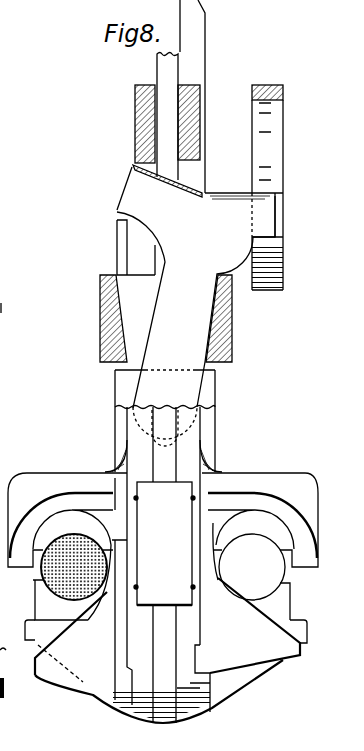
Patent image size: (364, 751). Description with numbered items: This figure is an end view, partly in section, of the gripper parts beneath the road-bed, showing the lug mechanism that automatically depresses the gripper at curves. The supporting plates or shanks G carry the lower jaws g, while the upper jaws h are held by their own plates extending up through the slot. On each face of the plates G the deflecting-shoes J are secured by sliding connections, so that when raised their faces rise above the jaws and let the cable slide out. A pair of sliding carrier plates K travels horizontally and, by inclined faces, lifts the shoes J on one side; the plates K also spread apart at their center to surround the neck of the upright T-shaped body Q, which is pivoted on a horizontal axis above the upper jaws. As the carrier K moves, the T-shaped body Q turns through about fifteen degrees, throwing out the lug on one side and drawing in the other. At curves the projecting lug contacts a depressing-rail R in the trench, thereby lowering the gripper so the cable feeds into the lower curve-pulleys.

The supporting plates or shanks G is at (163, 72).
The depressing-rail R is at (285, 170).
The T-shaped body Q is at (200, 286).
The sliding carrier plates K is at (100, 328).
The upper jaws h is at (163, 520).
The deflecting-shoes J is at (167, 617).
The lower jaws g is at (39, 646).